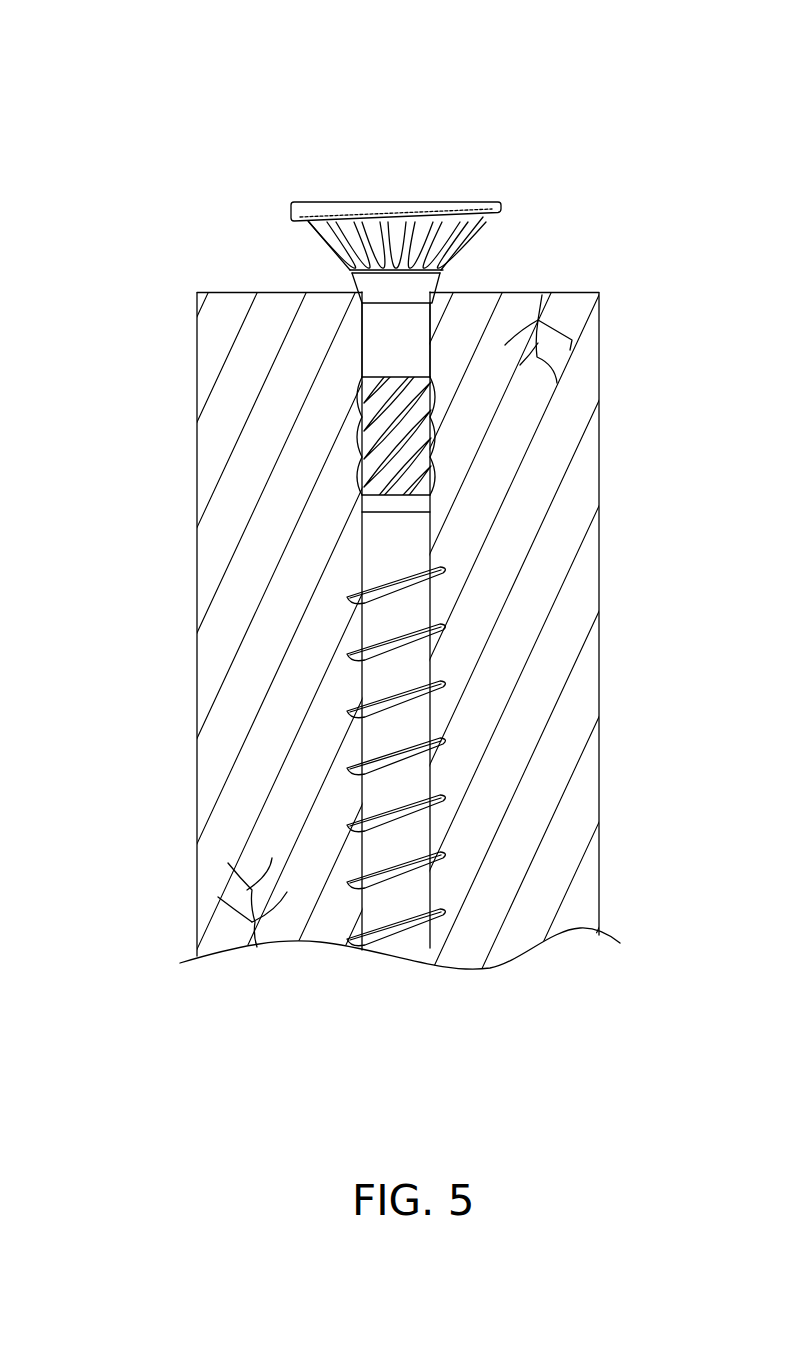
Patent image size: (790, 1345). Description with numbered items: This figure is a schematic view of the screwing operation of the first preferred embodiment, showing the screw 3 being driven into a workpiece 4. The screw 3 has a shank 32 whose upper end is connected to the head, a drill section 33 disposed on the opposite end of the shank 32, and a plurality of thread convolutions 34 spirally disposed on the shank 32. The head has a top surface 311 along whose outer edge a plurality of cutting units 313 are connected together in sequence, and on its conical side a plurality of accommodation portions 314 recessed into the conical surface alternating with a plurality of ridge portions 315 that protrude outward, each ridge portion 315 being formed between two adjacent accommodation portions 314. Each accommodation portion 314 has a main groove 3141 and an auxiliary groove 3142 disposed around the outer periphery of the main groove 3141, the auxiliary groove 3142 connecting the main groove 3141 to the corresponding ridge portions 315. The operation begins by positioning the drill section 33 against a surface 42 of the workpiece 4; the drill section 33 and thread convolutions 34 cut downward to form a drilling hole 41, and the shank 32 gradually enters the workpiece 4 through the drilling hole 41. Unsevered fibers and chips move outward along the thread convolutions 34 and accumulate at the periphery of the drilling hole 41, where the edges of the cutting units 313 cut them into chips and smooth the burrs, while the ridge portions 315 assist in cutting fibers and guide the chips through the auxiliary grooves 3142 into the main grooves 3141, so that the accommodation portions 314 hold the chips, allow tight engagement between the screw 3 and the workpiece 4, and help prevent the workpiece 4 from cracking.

The screw 3 is at (383, 477).
The top surface 311 is at (452, 205).
The cutting units 313 is at (448, 173).
The accommodation portions 314 is at (390, 205).
The main groove 3141 is at (381, 232).
The auxiliary groove 3142 is at (358, 226).
The ridge portions 315 is at (432, 232).
The shank 32 is at (378, 350).
The drill section 33 is at (413, 945).
The thread convolutions 34 is at (353, 600).
The workpiece 4 is at (395, 595).
The drilling hole 41 is at (378, 302).
The surface 42 is at (222, 292).